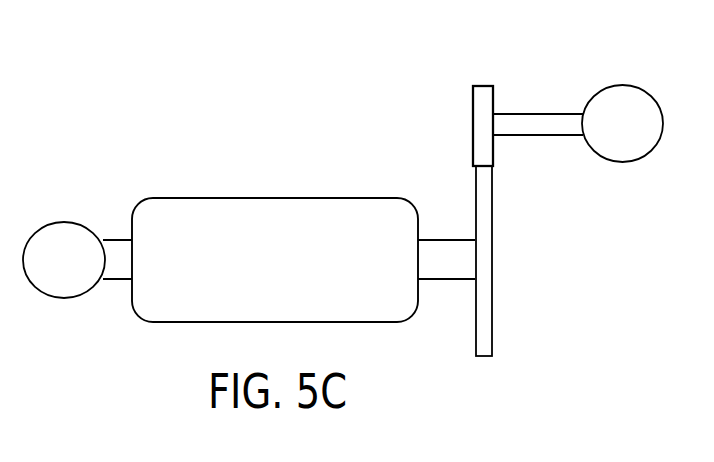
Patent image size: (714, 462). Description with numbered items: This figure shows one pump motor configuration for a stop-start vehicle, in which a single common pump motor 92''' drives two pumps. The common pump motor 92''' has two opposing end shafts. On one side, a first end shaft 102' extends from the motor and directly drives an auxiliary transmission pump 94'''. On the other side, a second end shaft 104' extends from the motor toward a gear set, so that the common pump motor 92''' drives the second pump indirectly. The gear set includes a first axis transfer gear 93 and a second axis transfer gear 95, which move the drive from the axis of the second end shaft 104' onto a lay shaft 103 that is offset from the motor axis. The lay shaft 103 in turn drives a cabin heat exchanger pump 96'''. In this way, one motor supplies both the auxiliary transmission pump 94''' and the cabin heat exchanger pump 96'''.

The common pump motor 92''' is at (275, 232).
The auxiliary transmission pump 94''' is at (64, 230).
The cabin heat exchanger pump 96''' is at (622, 95).
The first end shaft 102' is at (120, 229).
The second end shaft 104' is at (446, 229).
The second axis transfer gear 95 is at (471, 110).
The first axis transfer gear 93 is at (493, 298).
The lay shaft 103 is at (530, 114).